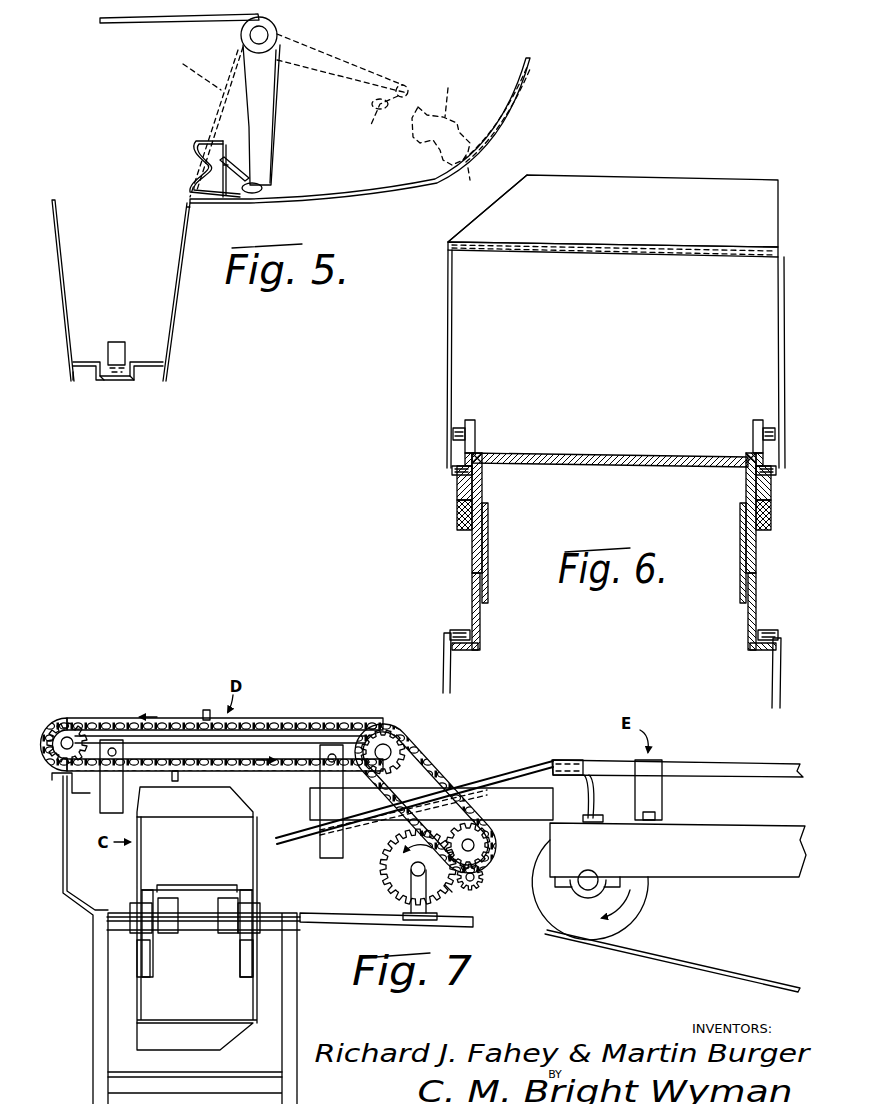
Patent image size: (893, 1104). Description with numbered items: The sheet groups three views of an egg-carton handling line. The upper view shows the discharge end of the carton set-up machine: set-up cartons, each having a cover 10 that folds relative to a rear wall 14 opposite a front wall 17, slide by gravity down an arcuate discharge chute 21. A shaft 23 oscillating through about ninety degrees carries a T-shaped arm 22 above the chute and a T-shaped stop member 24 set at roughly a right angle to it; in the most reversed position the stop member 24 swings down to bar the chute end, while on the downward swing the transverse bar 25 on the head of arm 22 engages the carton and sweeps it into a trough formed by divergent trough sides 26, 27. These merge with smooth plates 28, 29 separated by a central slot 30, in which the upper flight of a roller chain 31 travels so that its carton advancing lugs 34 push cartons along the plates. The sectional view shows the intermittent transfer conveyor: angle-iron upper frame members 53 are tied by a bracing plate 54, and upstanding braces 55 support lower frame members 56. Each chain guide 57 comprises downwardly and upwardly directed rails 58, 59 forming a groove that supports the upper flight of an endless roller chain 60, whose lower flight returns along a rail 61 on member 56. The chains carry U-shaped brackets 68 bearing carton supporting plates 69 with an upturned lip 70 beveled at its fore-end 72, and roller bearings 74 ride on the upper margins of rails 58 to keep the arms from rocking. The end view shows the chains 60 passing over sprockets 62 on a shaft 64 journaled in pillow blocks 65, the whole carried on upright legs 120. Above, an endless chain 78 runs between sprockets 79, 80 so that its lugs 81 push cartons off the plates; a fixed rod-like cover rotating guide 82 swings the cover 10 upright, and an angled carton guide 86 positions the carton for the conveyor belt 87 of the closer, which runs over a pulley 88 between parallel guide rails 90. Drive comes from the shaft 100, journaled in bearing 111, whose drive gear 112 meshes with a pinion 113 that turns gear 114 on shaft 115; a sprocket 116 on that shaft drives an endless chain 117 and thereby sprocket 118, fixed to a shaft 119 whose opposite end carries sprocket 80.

In FIG. 5, the cover 10 is at (497, 104).
In FIG. 5, the rear wall 14 is at (464, 182).
In FIG. 5, the front wall 17 is at (441, 116).
In FIG. 5, the discharge chute 21 is at (420, 192).
In FIG. 5, the T-shaped arm 22 is at (355, 55).
In FIG. 5, the shaft 23 is at (268, 33).
In FIG. 5, the stop member 24 is at (175, 38).
In FIG. 5, the transverse bar 25 is at (262, 176).
In FIG. 5, the trough side 26 is at (175, 257).
In FIG. 5, the trough side 27 is at (65, 278).
In FIG. 5, the plate 28 is at (152, 362).
In FIG. 5, the plate 29 is at (82, 377).
In FIG. 5, the slot 30 is at (130, 377).
In FIG. 5, the roller chain 31 is at (107, 377).
In FIG. 5, the carton advancing lug 34 is at (118, 343).
In FIG. 6, the upper frame member 53 is at (484, 465).
In FIG. 6, the bracing plate 54 is at (608, 457).
In FIG. 6, the brace 55 is at (488, 560).
In FIG. 6, the lower frame member 56 is at (482, 620).
In FIG. 6, the chain guide 57 is at (458, 518).
In FIG. 6, the rail 58 is at (473, 455).
In FIG. 6, the rail 59 is at (458, 478).
In FIG. 6, the endless roller chain 60 is at (452, 470).
In FIG. 6, the rail 61 is at (465, 650).
In FIG. 7, the sprocket 62 is at (140, 917).
In FIG. 7, the shaft 64 is at (199, 931).
In FIG. 7, the pillow block 65 is at (170, 935).
In FIG. 6, the U-shaped bracket 68 is at (446, 342).
In FIG. 6, the carton supporting plate 69 is at (783, 248).
In FIG. 6, the upturned lip 70 is at (738, 193).
In FIG. 7, the upturned lip 70 is at (205, 811).
In FIG. 6, the fore-end 72 is at (495, 202).
In FIG. 6, the roller bearing 74 is at (475, 420).
In FIG. 7, the endless chain 78 is at (267, 722).
In FIG. 7, the sprocket 79 is at (77, 733).
In FIG. 7, the sprocket 80 is at (462, 826).
In FIG. 7, the lug 81 is at (206, 712).
In FIG. 7, the cover rotating guide 82 is at (486, 783).
In FIG. 7, the carton guide 86 is at (553, 768).
In FIG. 7, the endless conveyor belt 87 is at (690, 968).
In FIG. 7, the pulley 88 is at (632, 908).
In FIG. 7, the guide rail 90 is at (712, 768).
In FIG. 7, the drive shaft 100 is at (403, 873).
In FIG. 7, the bearing 111 is at (415, 893).
In FIG. 7, the drive gear 112 is at (452, 894).
In FIG. 7, the driven pinion 113 is at (482, 877).
In FIG. 7, the driven gear 114 is at (397, 848).
In FIG. 7, the shaft 115 is at (476, 845).
In FIG. 7, the sprocket 116 is at (490, 833).
In FIG. 7, the endless chain 117 is at (443, 777).
In FIG. 7, the sprocket 118 is at (397, 747).
In FIG. 7, the shaft 119 is at (384, 746).
In FIG. 7, the upright legs 120 is at (282, 1073).